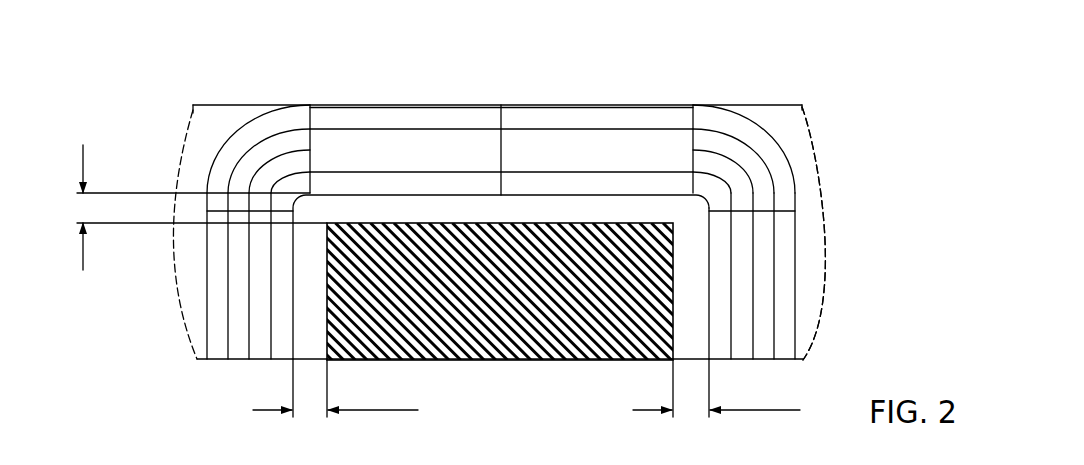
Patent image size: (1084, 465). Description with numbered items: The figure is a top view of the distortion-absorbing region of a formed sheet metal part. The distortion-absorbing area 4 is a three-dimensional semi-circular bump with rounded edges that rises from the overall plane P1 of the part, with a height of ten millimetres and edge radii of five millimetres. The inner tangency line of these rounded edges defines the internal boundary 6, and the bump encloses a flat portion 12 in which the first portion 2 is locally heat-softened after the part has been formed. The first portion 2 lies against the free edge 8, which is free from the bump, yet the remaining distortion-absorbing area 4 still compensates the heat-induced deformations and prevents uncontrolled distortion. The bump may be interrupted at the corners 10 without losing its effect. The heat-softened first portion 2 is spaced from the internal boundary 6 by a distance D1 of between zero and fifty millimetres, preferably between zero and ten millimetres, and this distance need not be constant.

The first portion 2 is at (565, 360).
The distortion-absorbing area 4 is at (408, 147).
The internal boundary 6 is at (562, 194).
The free edge 8 is at (197, 360).
The corners 10 is at (255, 165).
The flat portion 12 is at (692, 285).
The overall plane P1 is at (788, 135).
The distance D1 is at (420, 278).